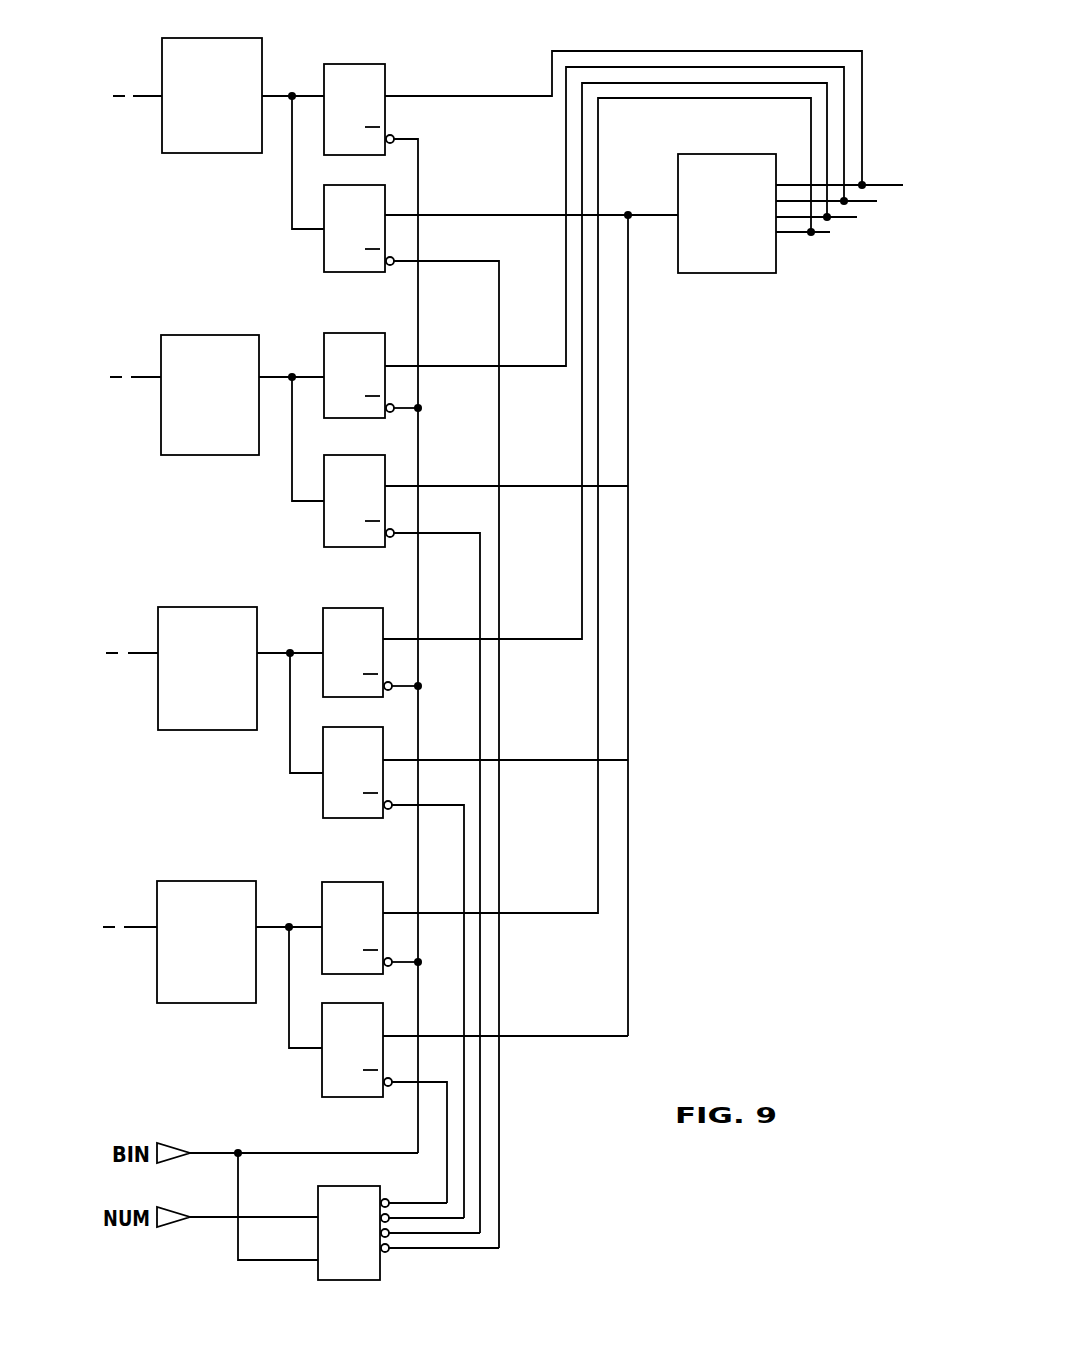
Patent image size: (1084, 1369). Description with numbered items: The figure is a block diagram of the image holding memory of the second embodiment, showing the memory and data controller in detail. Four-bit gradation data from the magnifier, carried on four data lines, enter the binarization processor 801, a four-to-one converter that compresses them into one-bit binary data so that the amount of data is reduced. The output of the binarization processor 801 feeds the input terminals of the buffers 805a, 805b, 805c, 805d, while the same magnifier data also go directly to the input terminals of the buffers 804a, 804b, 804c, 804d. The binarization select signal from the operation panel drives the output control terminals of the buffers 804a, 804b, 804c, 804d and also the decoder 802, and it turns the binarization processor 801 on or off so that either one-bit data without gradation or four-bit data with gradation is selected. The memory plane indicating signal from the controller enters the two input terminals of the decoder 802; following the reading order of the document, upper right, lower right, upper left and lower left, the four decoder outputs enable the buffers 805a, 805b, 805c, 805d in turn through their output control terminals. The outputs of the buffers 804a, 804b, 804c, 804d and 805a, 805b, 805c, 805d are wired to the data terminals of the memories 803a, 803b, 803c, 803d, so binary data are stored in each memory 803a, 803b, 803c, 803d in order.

The binarization processor 801 is at (685, 154).
The decoder 802 is at (362, 1186).
The memory 803a is at (228, 881).
The memory 803b is at (213, 607).
The memory 803c is at (224, 335).
The memory 803d is at (262, 55).
The buffer 804a is at (357, 882).
The buffer 804b is at (383, 612).
The buffer 804c is at (385, 345).
The buffer 804d is at (385, 75).
The buffer 805a is at (322, 1077).
The buffer 805b is at (383, 730).
The buffer 805c is at (385, 465).
The buffer 805d is at (385, 198).